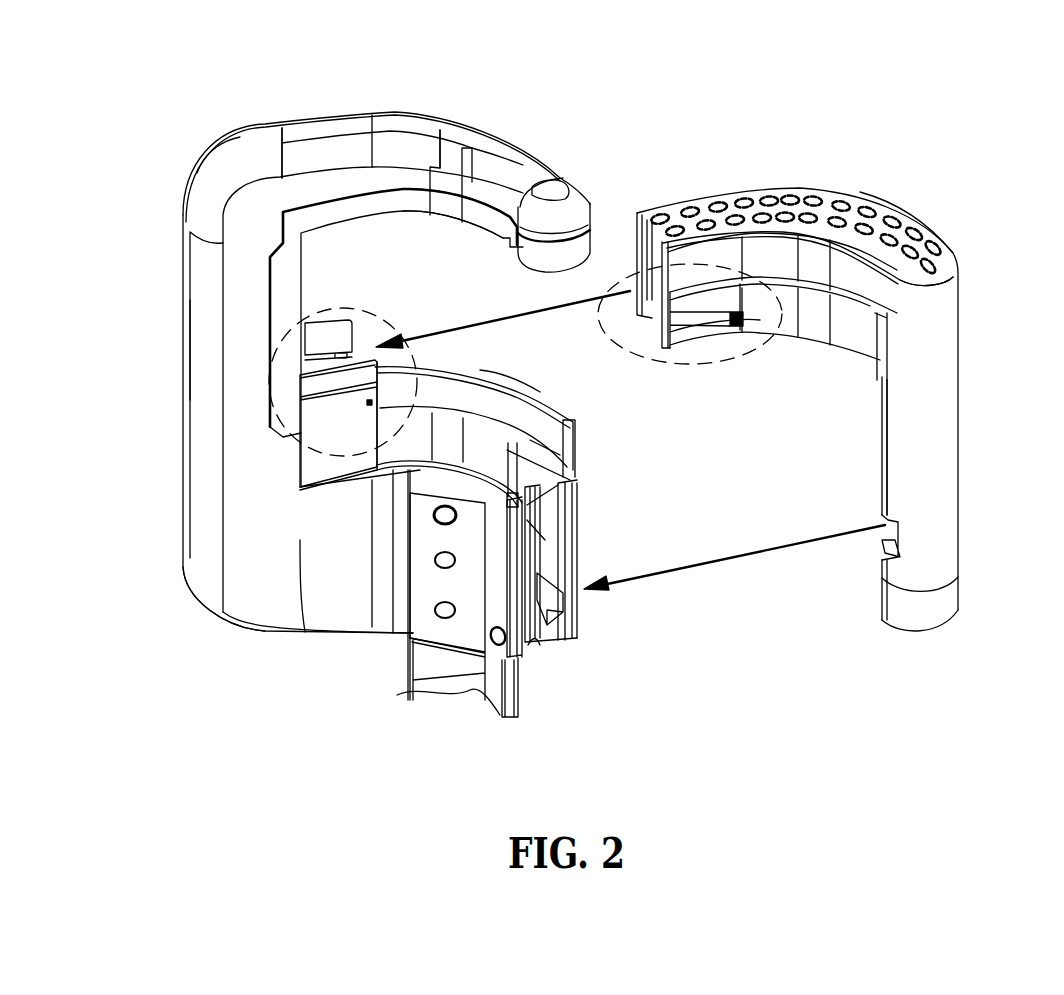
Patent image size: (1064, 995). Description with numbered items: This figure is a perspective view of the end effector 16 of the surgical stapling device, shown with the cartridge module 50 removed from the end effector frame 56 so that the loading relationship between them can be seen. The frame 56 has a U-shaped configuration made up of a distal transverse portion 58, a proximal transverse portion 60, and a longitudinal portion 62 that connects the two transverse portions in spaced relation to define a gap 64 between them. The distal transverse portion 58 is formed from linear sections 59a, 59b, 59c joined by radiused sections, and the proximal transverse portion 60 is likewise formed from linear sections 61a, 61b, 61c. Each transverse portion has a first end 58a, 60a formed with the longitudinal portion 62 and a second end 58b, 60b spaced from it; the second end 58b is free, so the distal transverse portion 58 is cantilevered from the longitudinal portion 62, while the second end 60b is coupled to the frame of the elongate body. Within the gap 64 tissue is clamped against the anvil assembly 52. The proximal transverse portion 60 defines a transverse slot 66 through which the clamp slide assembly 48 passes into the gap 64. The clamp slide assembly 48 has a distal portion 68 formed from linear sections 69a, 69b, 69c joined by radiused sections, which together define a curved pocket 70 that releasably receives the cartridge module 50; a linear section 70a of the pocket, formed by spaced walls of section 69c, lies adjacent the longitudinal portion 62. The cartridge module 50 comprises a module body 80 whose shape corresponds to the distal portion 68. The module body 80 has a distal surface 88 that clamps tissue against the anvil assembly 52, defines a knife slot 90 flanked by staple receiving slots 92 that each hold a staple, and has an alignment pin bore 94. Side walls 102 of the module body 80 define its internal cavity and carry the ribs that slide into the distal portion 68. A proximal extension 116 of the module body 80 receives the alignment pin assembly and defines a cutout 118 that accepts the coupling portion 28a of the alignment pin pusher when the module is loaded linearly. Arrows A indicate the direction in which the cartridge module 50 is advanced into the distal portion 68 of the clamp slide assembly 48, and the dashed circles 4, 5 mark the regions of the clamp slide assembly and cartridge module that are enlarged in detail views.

The end effector 16 is at (772, 68).
The coupling portion of the alignment pin pusher 28a is at (565, 602).
The clamp slide assembly 48 is at (542, 548).
The cartridge module 50 is at (904, 205).
The anvil assembly 52 is at (443, 205).
The end effector frame 56 is at (176, 504).
The distal transverse portion 58 is at (388, 140).
The first end of the distal transverse portion 58a is at (225, 142).
The second end of the distal transverse portion 58b is at (586, 192).
The linear section 59a is at (536, 163).
The linear section 59b is at (440, 128).
The linear section 59c is at (282, 133).
The proximal transverse portion 60 is at (308, 598).
The first end of the proximal transverse portion 60a is at (310, 537).
The second end of the proximal transverse portion 60b is at (578, 503).
The linear section 61a is at (500, 592).
The linear section 61b is at (417, 595).
The linear section 61c is at (308, 568).
The longitudinal portion 62 is at (195, 340).
The gap 64 is at (467, 282).
The transverse slot 66 is at (538, 648).
The distal portion of the clamp slide assembly 68 is at (534, 383).
The linear section 69a is at (562, 450).
The linear section 69b is at (430, 487).
The linear section 69c is at (300, 405).
The curved pocket 70 is at (500, 404).
The linear section of the curved pocket 70a is at (348, 340).
The module body 80 is at (962, 304).
The distal surface 88 is at (905, 238).
The knife slot 90 is at (830, 230).
The staple receiving slots 92 is at (935, 270).
The alignment pin bore 94 is at (872, 295).
The side walls 102 is at (720, 255).
The proximal extension 116 is at (935, 398).
The cutout 118 is at (882, 558).
The detail view 4 region 4 is at (297, 480).
The detail view 5 region 5 is at (758, 350).
The loading direction arrows A is at (737, 560).